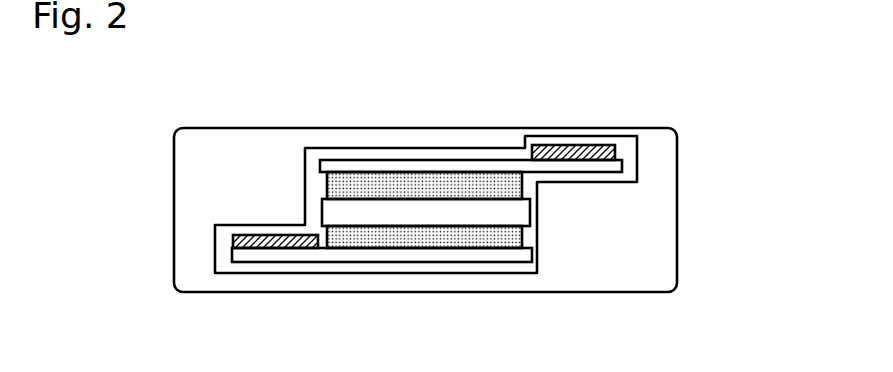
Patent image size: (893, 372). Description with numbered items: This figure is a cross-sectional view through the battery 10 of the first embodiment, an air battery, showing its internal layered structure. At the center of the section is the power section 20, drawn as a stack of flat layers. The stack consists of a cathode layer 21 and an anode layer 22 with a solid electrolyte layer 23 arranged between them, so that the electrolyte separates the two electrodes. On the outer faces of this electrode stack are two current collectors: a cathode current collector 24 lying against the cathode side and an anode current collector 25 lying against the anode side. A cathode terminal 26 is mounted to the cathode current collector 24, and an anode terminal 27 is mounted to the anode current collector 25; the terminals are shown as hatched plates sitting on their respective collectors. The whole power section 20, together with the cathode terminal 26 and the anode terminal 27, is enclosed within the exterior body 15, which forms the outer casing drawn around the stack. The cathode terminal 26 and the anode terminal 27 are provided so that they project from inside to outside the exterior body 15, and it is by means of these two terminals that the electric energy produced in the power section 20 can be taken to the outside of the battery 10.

The battery 10 is at (428, 87).
The exterior body 15 is at (233, 167).
The power section 20 is at (506, 215).
The cathode layer 21 is at (518, 238).
The anode layer 22 is at (518, 188).
The solid electrolyte layer 23 is at (518, 214).
The cathode current collector 24 is at (518, 255).
The anode current collector 25 is at (608, 167).
The cathode terminal 26 is at (250, 243).
The anode terminal 27 is at (598, 143).